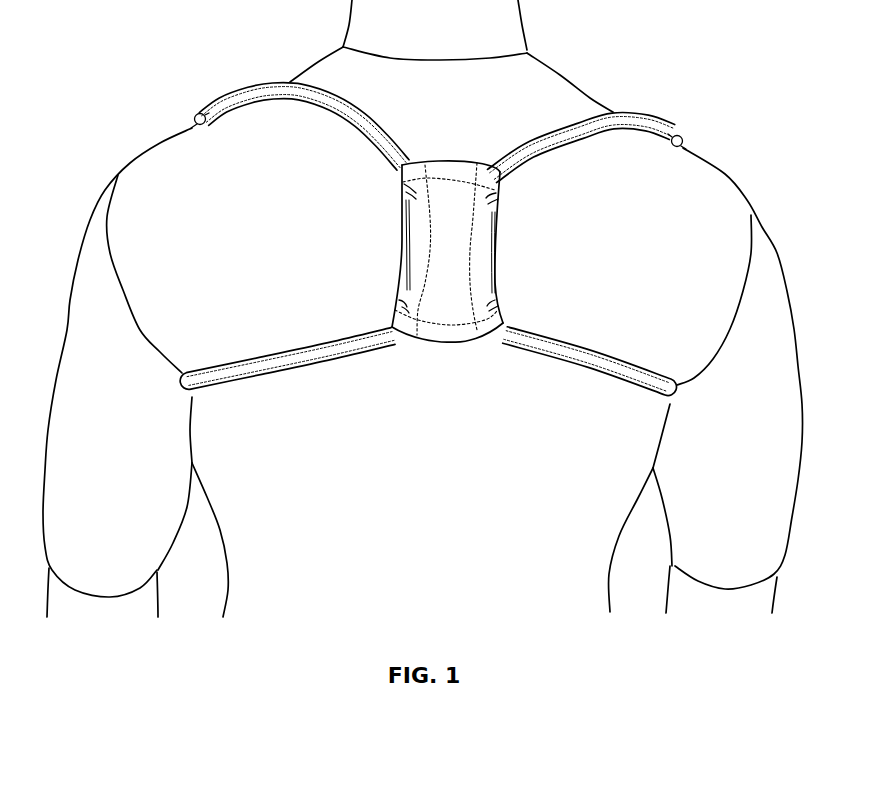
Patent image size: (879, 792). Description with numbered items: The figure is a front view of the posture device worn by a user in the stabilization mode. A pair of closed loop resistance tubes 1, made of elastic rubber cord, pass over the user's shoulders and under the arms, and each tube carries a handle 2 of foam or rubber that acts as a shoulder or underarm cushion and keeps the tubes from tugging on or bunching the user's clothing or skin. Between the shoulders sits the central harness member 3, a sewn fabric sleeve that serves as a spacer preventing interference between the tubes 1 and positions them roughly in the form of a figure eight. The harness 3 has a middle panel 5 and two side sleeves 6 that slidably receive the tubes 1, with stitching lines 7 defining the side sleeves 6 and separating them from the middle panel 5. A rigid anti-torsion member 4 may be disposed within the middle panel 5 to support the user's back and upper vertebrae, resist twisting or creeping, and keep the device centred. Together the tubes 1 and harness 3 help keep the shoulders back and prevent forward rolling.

The closed loop resistance tube 1 is at (267, 82).
The handle 2 is at (193, 125).
The central harness member 3 is at (436, 211).
The rigid anti-torsion member 4 is at (438, 160).
The middle panel 5 is at (462, 243).
The side sleeve 6 is at (398, 335).
The stitching line 7 is at (430, 267).